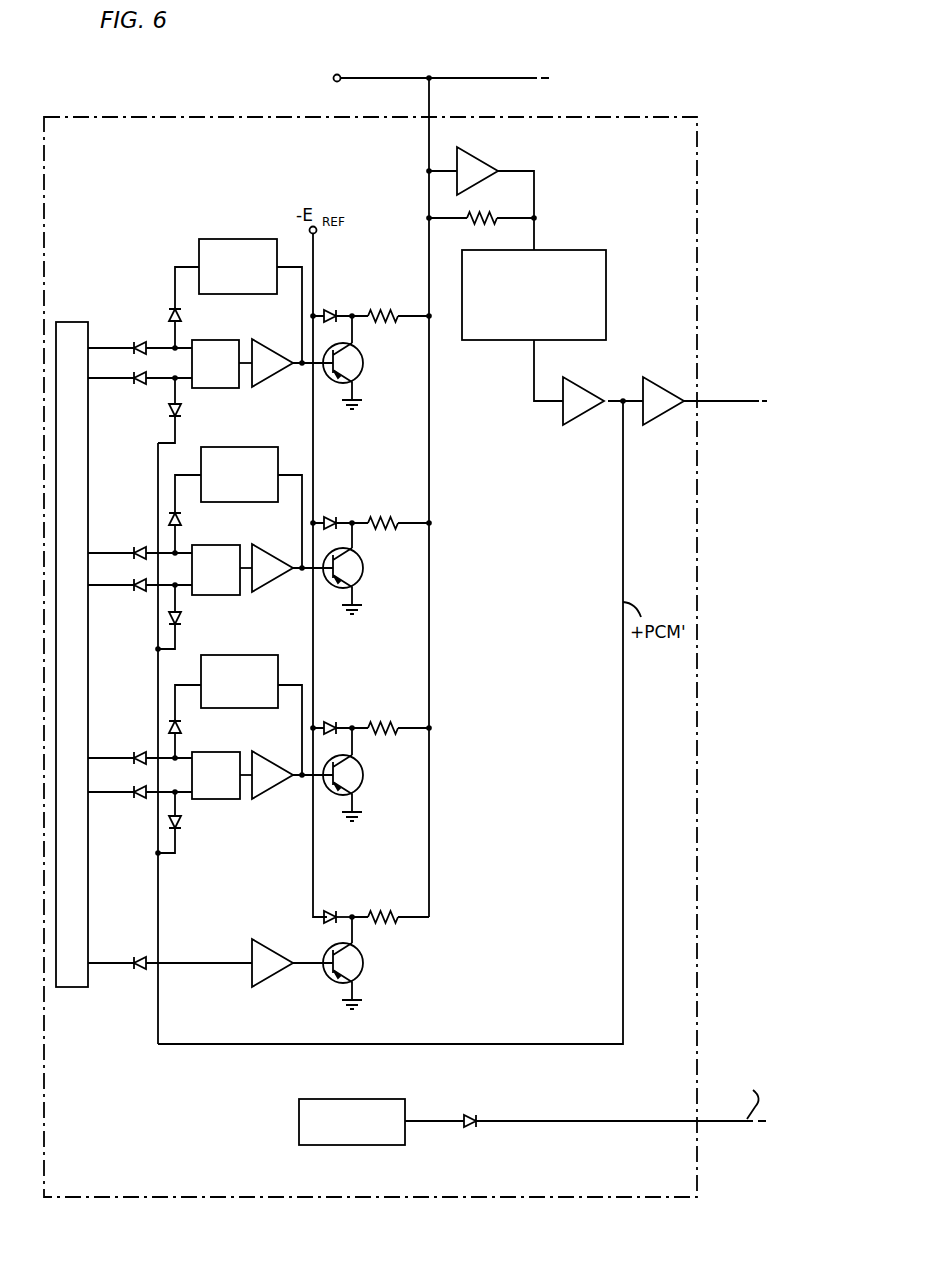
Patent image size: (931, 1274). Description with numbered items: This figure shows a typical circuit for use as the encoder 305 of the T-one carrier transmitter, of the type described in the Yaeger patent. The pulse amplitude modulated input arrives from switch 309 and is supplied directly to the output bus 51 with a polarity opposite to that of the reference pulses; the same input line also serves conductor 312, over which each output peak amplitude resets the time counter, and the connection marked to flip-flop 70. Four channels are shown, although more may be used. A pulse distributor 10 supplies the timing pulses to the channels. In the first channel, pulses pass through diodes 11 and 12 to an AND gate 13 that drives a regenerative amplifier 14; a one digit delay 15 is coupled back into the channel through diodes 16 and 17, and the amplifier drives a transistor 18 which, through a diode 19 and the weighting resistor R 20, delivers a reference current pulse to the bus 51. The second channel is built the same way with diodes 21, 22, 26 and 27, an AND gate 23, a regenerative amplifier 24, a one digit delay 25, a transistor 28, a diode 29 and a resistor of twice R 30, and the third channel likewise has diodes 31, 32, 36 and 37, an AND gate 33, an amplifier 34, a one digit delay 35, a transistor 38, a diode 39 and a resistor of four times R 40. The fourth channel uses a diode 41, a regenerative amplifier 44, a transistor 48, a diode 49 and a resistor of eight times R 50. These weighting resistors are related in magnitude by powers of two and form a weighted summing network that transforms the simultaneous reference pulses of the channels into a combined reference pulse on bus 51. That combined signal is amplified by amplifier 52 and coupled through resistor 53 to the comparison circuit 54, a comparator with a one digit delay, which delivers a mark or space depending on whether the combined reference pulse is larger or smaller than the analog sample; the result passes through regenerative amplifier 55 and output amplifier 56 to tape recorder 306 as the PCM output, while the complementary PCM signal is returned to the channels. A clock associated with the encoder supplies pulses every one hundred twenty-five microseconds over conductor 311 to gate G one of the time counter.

The pulse distributor 10 is at (71, 322).
The diode 11 is at (143, 342).
The diode 12 is at (137, 390).
The AND gate 13 is at (219, 340).
The amplifier 14 is at (276, 348).
The one digit delay 15 is at (240, 239).
The diode 16 is at (168, 311).
The diode 17 is at (167, 413).
The transistor 18 is at (360, 377).
The diode 19 is at (332, 309).
The resistor R 20 is at (381, 322).
The diode 21 is at (140, 546).
The diode 22 is at (144, 596).
The AND gate 23 is at (230, 546).
The amplifier 24 is at (271, 553).
The one digit delay 25 is at (236, 447).
The diode 26 is at (184, 521).
The diode 27 is at (184, 621).
The transistor 28 is at (360, 582).
The diode 29 is at (332, 516).
The resistor 2R 30 is at (390, 530).
The diode 31 is at (140, 751).
The diode 32 is at (145, 801).
The AND gate 33 is at (226, 752).
The amplifier 34 is at (275, 761).
The one digit delay 35 is at (246, 655).
The diode 36 is at (184, 727).
The diode 37 is at (184, 824).
The transistor 38 is at (360, 789).
The diode 39 is at (332, 721).
The resistor 4R 40 is at (397, 735).
The diode 41 is at (145, 956).
The regenerative amplifier 44 is at (268, 951).
The transistor 48 is at (364, 979).
The diode 49 is at (333, 908).
The resistor 8R 50 is at (400, 924).
The output bus 51 is at (432, 462).
The amplifier 52 is at (489, 160).
The resistor 53 is at (489, 216).
The comparison circuit 54 is at (607, 315).
The regenerative amplifier 55 is at (592, 388).
The amplifier 56 is at (661, 388).
The flip-flop 70 is at (575, 76).
The encoder 305 is at (71, 117).
The tape recorder 306 is at (739, 401).
The switch 309 is at (323, 77).
The conductor 311 is at (714, 1124).
The conductor 312 is at (486, 78).